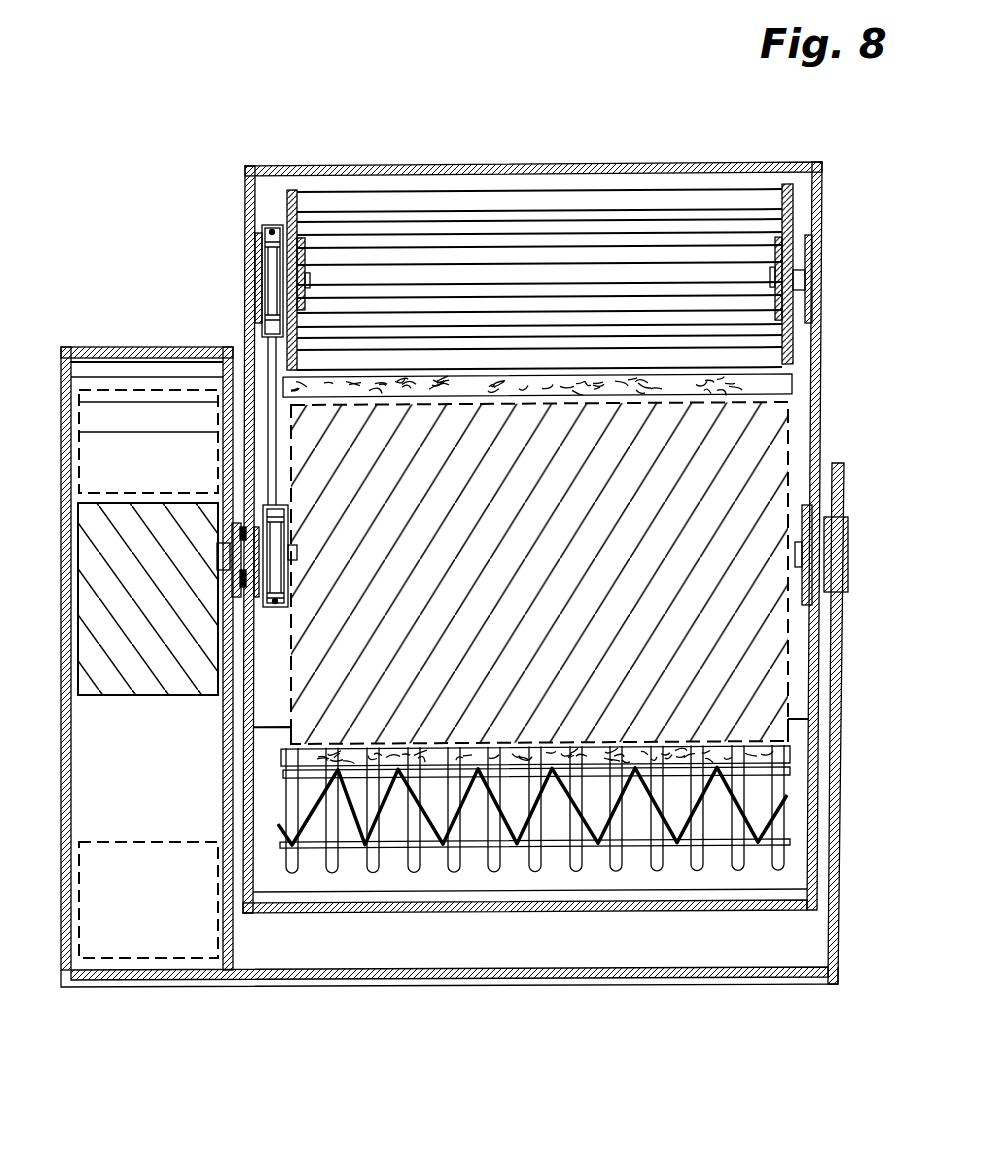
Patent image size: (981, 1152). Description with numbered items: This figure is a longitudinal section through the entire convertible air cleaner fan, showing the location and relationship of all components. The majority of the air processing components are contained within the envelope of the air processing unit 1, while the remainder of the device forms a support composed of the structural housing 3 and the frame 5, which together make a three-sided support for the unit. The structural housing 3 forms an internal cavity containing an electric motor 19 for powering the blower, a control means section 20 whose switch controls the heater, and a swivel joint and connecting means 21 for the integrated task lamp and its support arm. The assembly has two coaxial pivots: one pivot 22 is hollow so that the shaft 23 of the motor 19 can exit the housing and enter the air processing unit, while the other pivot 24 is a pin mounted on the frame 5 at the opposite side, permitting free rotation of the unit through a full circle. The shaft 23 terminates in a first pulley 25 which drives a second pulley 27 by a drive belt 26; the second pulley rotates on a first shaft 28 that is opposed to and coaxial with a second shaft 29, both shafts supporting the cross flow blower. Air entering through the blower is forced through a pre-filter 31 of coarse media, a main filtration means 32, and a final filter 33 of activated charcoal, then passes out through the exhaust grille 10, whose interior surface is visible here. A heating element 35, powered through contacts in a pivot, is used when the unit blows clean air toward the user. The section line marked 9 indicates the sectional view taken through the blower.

The air processing unit 1 is at (752, 162).
The structural housing 3 is at (58, 822).
The frame 5 is at (786, 958).
The section line 9-9 / upper filter 9 is at (545, 553).
The exhaust grille 10 is at (868, 790).
The electric motor 19 is at (108, 668).
The control means section 20 is at (143, 945).
The swivel joint and connecting means 21 is at (85, 473).
The pivot 22 is at (240, 532).
The shaft 23 is at (300, 552).
The pivot 24 is at (793, 562).
The first pulley 25 is at (272, 562).
The drive belt 26 is at (272, 473).
The second pulley 27 is at (248, 300).
The first shaft 28 is at (316, 278).
The second shaft 29 is at (822, 283).
The pre-filter 31 is at (823, 389).
The main filtration means 32 is at (765, 467).
The final filter 33 is at (793, 758).
The heating element 35 is at (760, 855).